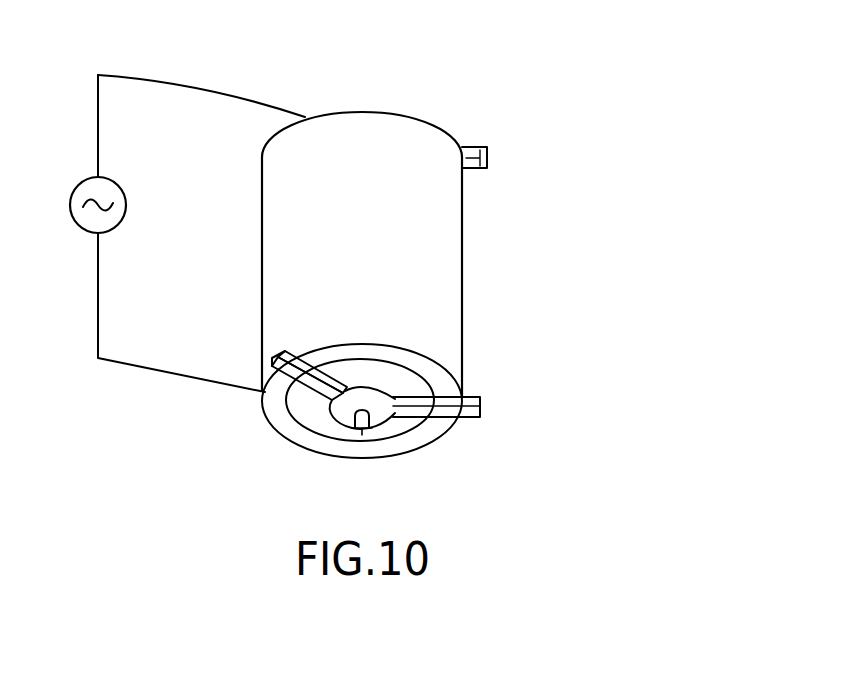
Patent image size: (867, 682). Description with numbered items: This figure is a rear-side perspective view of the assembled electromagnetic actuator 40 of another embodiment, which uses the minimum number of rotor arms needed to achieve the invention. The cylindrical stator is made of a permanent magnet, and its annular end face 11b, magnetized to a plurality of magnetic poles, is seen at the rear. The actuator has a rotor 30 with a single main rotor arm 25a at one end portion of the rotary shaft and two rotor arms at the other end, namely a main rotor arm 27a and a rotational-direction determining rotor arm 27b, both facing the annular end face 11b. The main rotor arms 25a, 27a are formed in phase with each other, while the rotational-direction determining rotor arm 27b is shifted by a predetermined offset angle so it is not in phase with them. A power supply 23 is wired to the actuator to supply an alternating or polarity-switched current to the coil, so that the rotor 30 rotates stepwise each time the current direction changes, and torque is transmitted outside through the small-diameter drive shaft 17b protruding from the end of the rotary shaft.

The electromagnetic actuator 40 is at (558, 100).
The main rotor arm 25a is at (488, 161).
The power supply 23 is at (118, 223).
The annular end face 11b is at (280, 418).
The rotor 30 is at (497, 428).
The rotational-direction determining rotor arm 27b is at (260, 370).
The main rotor arm 27a is at (484, 411).
The drive shaft 17b is at (362, 435).